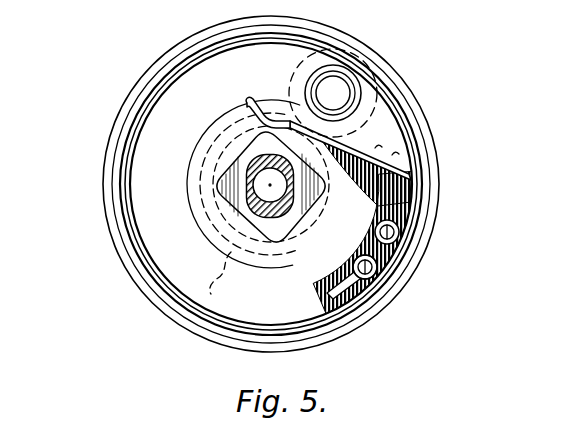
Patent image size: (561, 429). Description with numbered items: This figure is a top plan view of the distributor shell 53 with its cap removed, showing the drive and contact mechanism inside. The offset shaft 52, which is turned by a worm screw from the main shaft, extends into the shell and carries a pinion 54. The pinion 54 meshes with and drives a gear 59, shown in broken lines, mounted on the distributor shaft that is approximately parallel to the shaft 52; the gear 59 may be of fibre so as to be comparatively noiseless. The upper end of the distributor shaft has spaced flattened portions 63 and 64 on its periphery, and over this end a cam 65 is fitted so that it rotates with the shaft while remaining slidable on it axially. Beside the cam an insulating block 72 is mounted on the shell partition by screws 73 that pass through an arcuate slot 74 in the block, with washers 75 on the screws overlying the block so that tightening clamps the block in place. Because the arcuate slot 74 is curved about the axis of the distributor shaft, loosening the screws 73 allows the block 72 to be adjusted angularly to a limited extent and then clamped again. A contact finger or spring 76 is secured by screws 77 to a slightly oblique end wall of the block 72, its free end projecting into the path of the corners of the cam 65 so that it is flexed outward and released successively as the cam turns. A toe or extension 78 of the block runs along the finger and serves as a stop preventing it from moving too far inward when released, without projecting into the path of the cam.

The shaft 52 is at (314, 87).
The distributor shell 53 is at (104, 184).
The pinion 54 is at (377, 99).
The gear 59 is at (220, 282).
The flattened portion 63 is at (245, 204).
The flattened portion 64 is at (292, 240).
The cam 65 is at (233, 157).
The insulating block 72 is at (330, 299).
The screws 73 is at (373, 274).
The arcuate slot 74 is at (390, 257).
The washers 75 is at (400, 232).
The contact finger or spring 76 is at (345, 135).
The screws 77 is at (401, 156).
The toe or extension 78 is at (293, 184).